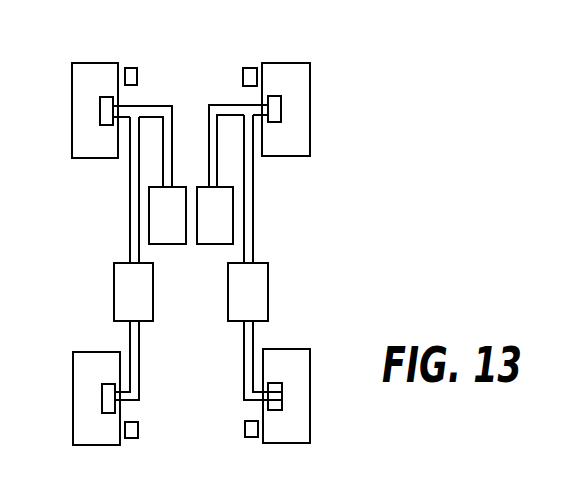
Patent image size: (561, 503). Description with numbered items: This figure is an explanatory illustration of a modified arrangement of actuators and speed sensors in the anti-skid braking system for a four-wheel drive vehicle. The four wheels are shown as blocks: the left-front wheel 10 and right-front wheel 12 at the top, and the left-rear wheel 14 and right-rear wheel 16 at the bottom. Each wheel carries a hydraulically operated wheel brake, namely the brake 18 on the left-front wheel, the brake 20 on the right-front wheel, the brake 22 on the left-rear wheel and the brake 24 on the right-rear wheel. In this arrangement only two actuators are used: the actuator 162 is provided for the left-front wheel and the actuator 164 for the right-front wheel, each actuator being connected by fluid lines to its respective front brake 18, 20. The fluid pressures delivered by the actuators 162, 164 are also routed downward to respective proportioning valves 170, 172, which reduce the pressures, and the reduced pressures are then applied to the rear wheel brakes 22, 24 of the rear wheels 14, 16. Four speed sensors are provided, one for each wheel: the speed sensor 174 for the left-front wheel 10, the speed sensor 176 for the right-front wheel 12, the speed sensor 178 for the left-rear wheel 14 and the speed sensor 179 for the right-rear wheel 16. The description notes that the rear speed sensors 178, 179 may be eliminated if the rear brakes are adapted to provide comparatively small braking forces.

The left-front wheel 10 is at (84, 142).
The right-front wheel 12 is at (293, 143).
The left-rear wheel 14 is at (89, 362).
The right-rear wheel 16 is at (295, 363).
The wheel brake 18 is at (106, 114).
The wheel brake 20 is at (275, 105).
The wheel brake 22 is at (106, 408).
The wheel brake 24 is at (282, 400).
The actuator 162 is at (160, 213).
The actuator 164 is at (224, 211).
The proportioning valve 170 is at (125, 282).
The proportioning valve 172 is at (258, 279).
The speed sensor 174 is at (131, 68).
The speed sensor 176 is at (251, 68).
The speed sensor 178 is at (138, 430).
The speed sensor 179 is at (245, 428).